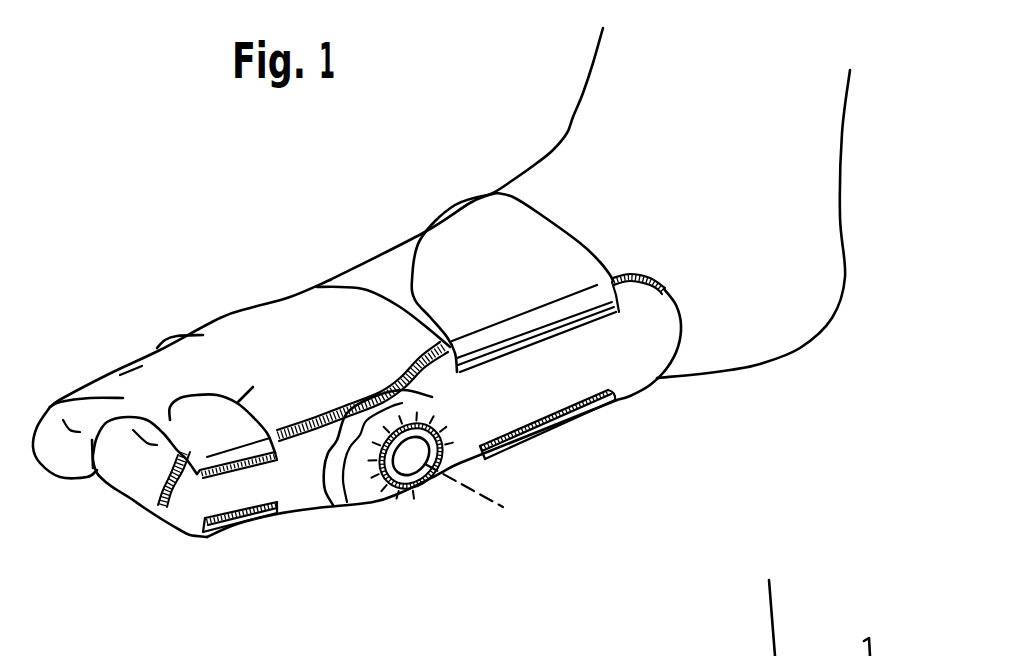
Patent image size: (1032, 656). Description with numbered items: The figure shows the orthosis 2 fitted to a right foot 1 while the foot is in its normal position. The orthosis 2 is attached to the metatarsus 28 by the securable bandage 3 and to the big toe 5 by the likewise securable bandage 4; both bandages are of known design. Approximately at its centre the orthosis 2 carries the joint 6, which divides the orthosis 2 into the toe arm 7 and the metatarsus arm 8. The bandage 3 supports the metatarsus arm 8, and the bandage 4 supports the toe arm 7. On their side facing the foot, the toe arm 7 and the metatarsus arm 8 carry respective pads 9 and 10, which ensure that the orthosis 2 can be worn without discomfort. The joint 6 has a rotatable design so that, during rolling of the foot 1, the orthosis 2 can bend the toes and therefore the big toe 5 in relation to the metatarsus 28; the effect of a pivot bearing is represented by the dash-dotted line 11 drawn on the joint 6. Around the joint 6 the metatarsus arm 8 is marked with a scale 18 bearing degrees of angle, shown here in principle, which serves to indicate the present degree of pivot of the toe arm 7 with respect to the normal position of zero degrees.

The right foot 1 is at (820, 107).
The orthosis 2 is at (331, 528).
The securable bandage 3 is at (440, 267).
The securable bandage 4 is at (193, 415).
The big toe 5 is at (137, 482).
The joint 6 is at (412, 465).
The toe arm 7 is at (303, 490).
The metatarsus arm 8 is at (567, 388).
The pad 9 is at (317, 412).
The pad 10 is at (632, 277).
The dash-dotted line 11 is at (495, 503).
The scale 18 is at (367, 481).
The metatarsus 28 is at (283, 287).